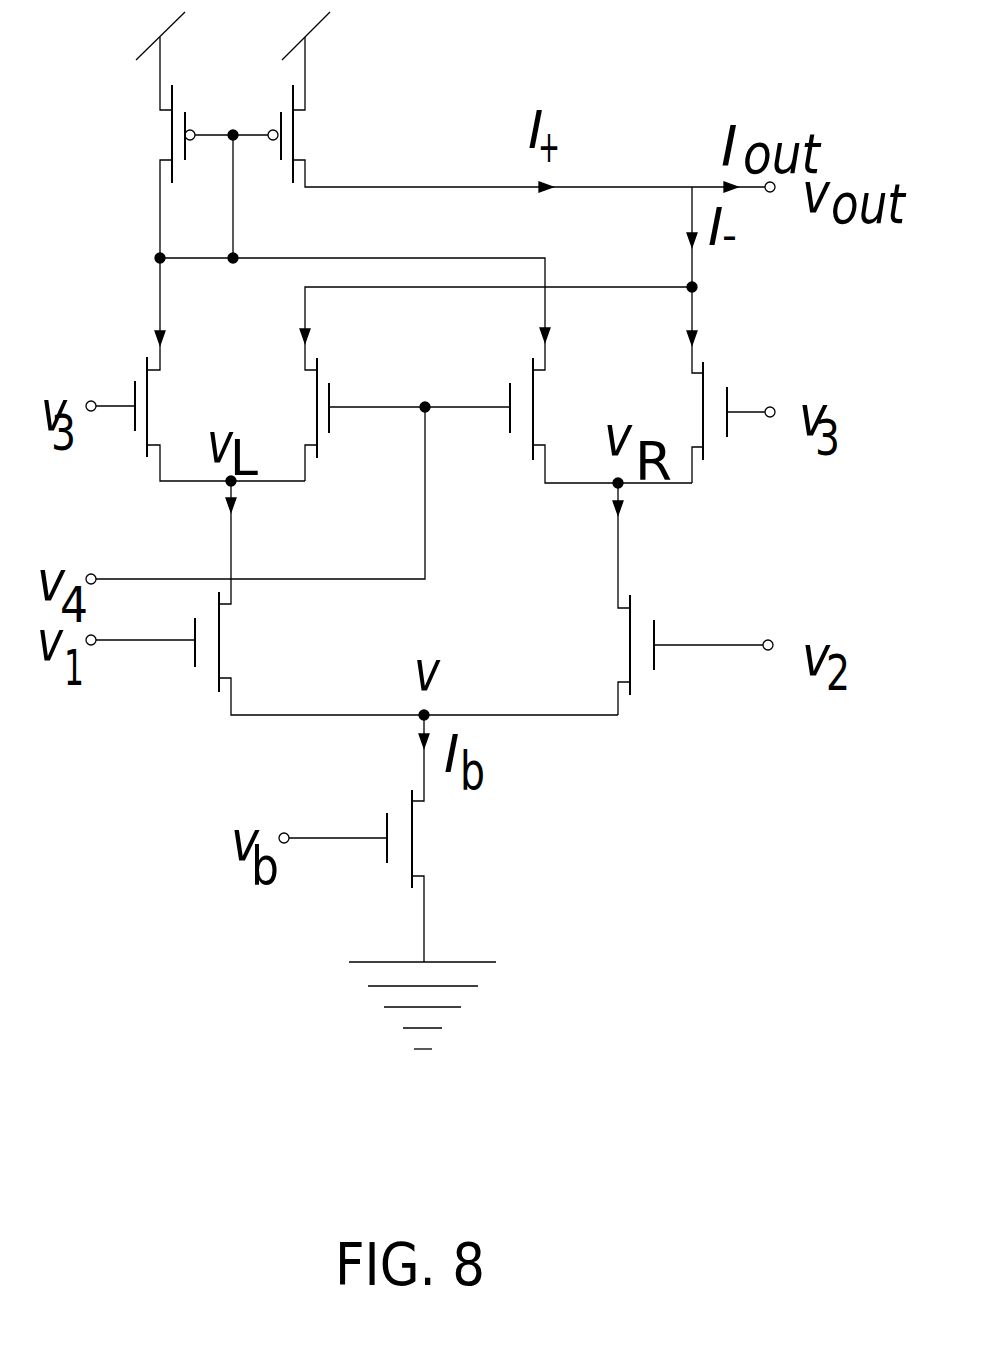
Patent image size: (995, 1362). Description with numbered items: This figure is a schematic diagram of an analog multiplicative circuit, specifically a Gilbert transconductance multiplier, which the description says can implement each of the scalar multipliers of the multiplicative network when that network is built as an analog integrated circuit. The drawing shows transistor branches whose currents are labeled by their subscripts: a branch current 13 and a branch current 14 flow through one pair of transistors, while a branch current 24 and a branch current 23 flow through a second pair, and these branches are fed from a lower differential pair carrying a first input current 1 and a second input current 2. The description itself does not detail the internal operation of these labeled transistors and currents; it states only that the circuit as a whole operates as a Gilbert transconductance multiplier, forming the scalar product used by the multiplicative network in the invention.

The transistor carrying current I13 13 is at (195, 393).
The transistor carrying current I14 14 is at (407, 393).
The transistor carrying current I24 24 is at (601, 403).
The transistor carrying current I23 23 is at (733, 395).
The left input transistor carrying current I1 1 is at (352, 595).
The right input transistor carrying current I2 2 is at (674, 599).